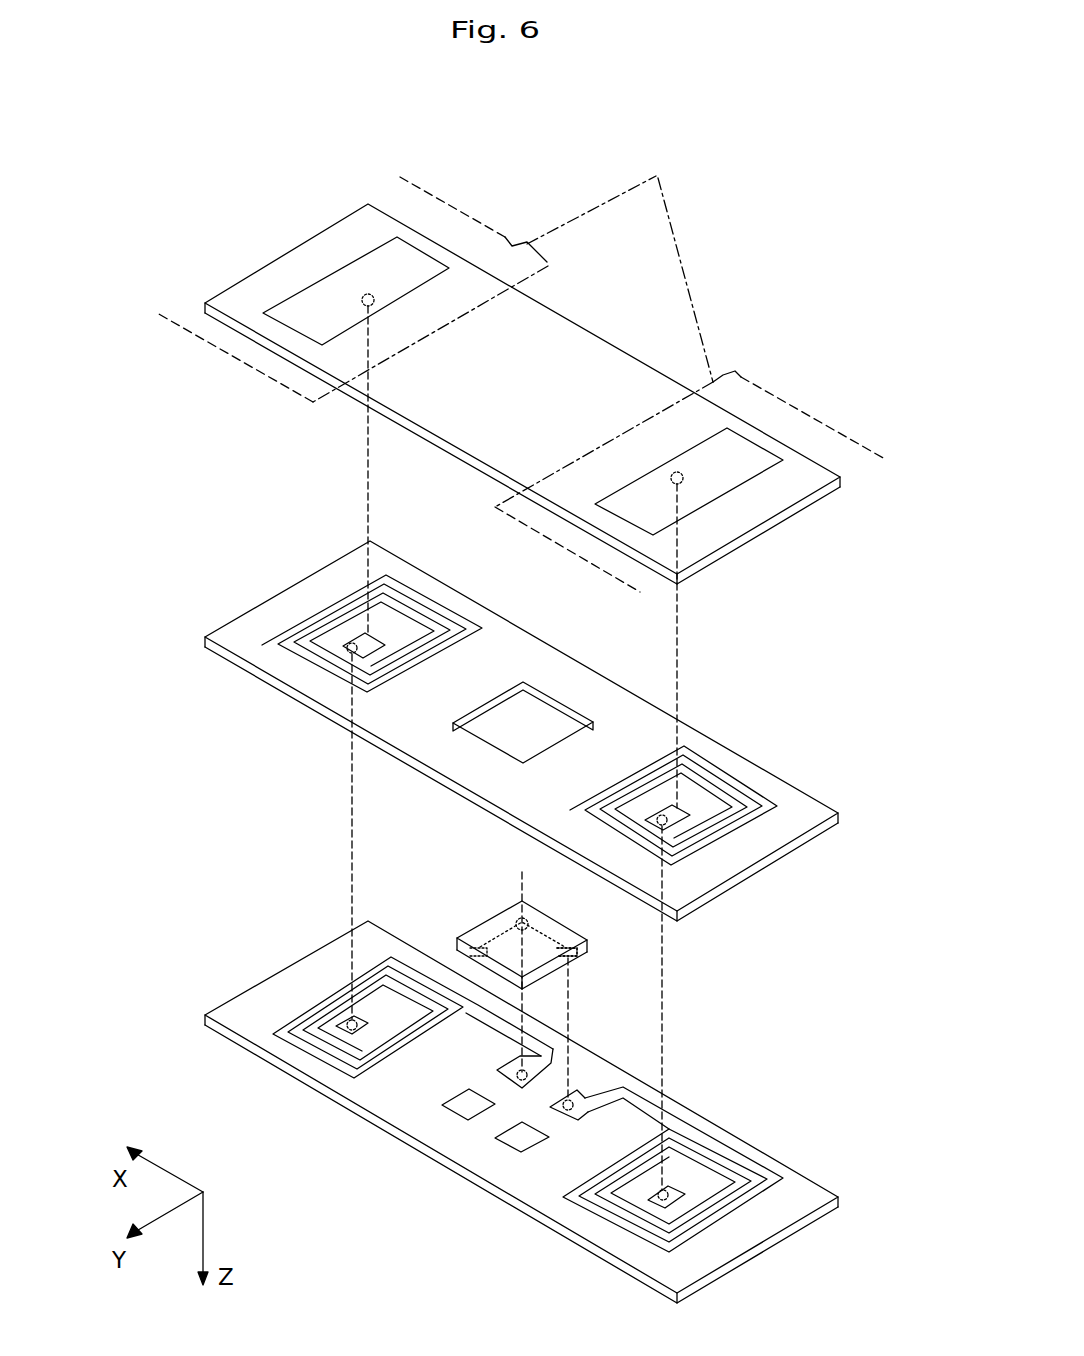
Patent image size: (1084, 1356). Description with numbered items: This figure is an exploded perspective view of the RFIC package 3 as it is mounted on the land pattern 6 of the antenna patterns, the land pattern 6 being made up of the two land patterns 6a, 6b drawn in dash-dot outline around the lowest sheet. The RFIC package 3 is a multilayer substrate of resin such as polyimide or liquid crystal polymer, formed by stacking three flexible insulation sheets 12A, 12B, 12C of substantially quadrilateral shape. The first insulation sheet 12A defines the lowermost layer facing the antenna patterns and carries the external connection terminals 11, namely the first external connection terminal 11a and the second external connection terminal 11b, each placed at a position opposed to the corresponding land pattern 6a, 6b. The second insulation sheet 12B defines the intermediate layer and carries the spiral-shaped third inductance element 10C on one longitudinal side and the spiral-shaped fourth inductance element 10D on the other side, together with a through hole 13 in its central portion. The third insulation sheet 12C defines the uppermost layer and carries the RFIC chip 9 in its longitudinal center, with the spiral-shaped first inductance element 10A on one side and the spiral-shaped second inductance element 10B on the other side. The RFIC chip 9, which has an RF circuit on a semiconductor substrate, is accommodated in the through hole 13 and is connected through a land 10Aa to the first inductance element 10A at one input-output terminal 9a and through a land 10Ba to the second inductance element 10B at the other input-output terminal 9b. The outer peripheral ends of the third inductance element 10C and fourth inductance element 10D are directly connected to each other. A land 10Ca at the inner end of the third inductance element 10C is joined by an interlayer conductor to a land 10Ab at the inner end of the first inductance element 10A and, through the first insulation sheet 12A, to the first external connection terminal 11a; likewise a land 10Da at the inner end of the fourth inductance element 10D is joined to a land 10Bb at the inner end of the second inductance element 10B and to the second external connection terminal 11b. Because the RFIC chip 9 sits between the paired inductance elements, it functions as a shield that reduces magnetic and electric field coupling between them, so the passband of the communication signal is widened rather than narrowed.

The RFIC package 3 is at (734, 246).
The land pattern 6 is at (658, 180).
The land pattern 6a is at (511, 230).
The land pattern 6b is at (772, 388).
The RFIC chip 9 is at (522, 972).
The input-output terminal 9a is at (505, 918).
The input-output terminal 9b is at (583, 967).
The first inductance element 10A is at (380, 977).
The land 10Aa is at (498, 1072).
The land 10Ab is at (345, 1022).
The second inductance element 10B is at (714, 1150).
The land 10Ba is at (580, 1102).
The land 10Bb is at (670, 1197).
The third inductance element 10C is at (418, 602).
The land 10Ca is at (364, 642).
The fourth inductance element 10D is at (714, 770).
The land 10Da is at (680, 812).
The external connection terminals 11 is at (697, 462).
The first external connection terminal 11a is at (398, 262).
The second external connection terminal 11b is at (764, 458).
The first insulation sheet 12A is at (233, 292).
The second insulation sheet 12B is at (223, 628).
The third insulation sheet 12C is at (233, 1003).
The through hole 13 is at (540, 718).